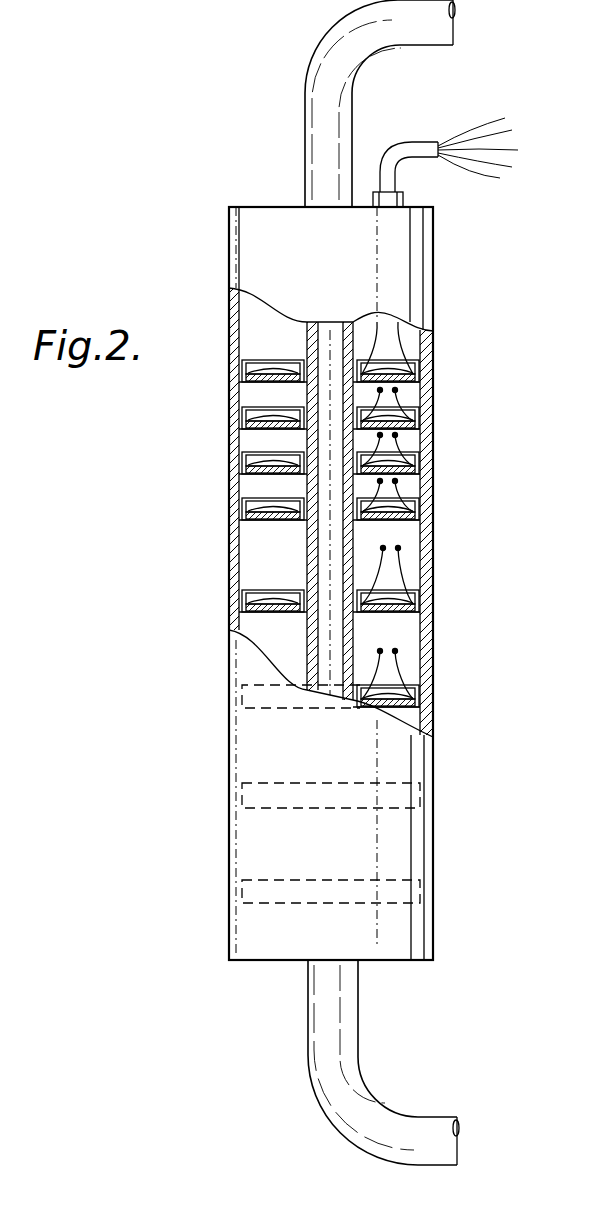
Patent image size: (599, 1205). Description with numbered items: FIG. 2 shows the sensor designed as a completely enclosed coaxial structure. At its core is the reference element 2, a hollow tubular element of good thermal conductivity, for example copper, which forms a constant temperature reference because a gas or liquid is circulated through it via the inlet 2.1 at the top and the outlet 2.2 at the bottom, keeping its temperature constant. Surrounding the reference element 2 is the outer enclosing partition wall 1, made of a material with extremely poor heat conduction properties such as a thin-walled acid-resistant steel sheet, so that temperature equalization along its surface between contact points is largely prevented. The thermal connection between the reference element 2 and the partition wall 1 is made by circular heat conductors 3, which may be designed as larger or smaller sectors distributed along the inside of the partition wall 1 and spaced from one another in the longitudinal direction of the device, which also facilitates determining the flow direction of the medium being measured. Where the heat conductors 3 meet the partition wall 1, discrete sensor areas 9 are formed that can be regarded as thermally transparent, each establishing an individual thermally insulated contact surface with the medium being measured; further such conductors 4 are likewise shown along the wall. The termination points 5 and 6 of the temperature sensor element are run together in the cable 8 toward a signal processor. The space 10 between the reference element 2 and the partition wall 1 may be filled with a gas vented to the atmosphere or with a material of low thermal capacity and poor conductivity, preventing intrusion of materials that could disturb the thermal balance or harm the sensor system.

The partition wall 1 is at (432, 270).
The reference element 2 is at (352, 345).
The inlet 2.1 is at (455, 18).
The outlet 2.2 is at (428, 1122).
The heat conductor 3 is at (417, 370).
The measuring ring 4 is at (395, 460).
The termination point 5 is at (383, 548).
The termination point 6 is at (398, 549).
The cable 8 is at (428, 148).
The sensor area 9 is at (415, 800).
The space 10 is at (393, 633).